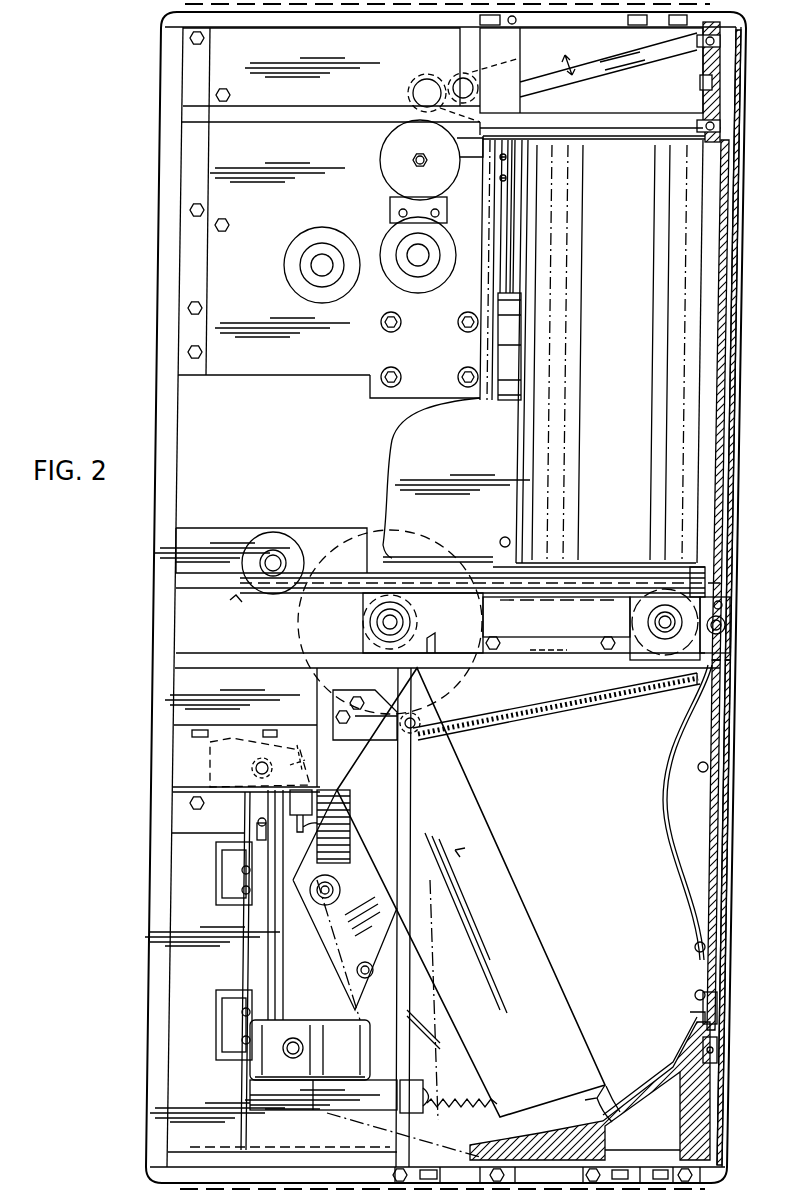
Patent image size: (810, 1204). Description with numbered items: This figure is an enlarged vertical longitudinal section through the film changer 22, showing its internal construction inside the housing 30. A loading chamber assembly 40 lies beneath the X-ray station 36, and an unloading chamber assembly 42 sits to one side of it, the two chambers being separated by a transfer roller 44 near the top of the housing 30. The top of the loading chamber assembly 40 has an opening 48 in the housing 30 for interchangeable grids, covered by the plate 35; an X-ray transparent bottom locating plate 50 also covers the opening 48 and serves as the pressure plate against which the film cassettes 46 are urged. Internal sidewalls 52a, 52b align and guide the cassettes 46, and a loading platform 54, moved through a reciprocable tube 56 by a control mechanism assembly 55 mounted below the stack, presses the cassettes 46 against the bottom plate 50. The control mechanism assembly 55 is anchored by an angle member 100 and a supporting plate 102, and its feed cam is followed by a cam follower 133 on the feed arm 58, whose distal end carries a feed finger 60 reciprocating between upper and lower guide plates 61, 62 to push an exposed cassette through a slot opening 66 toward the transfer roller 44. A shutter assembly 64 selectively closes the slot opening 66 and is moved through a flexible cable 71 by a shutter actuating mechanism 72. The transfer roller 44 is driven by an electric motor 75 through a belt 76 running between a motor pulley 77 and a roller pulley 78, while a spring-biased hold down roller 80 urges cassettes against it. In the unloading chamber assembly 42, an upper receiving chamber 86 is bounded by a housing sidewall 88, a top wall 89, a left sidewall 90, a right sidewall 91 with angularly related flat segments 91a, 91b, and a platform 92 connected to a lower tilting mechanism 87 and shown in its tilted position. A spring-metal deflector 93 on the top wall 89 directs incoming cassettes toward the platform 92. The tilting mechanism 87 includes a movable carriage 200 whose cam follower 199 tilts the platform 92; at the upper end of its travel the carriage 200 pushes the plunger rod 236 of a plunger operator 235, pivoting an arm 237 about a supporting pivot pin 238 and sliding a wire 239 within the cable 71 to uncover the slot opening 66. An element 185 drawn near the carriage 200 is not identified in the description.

The film changer 22 is at (752, 724).
The housing 30 is at (725, 1125).
The top cover plate 35 is at (742, 262).
The X-ray station 36 is at (753, 203).
The loading chamber assembly 40 is at (701, 346).
The unloading chamber assembly 42 is at (690, 980).
The transfer roller 44 is at (662, 597).
The film cassettes 46 is at (613, 275).
The opening 48 is at (735, 173).
The bottom locating plate 50 is at (735, 226).
The internal sidewall 52a is at (576, 143).
The inner transverse sidewall 52b is at (595, 567).
The loading platform 54 is at (521, 338).
The control mechanism assembly 55 is at (330, 368).
The tube 56 is at (480, 345).
The feed arm 58 is at (609, 86).
The feed finger 60 is at (703, 82).
The upper guide plate 61 is at (722, 33).
The lower guide plate 62 is at (697, 50).
The shutter assembly 64 is at (653, 597).
The slot opening 66 is at (707, 567).
The flexible cable 71 is at (238, 606).
The shutter actuating mechanism 72 is at (144, 597).
The electric motor 75 is at (332, 550).
The belt 76 is at (468, 565).
The motor pulley 77 is at (390, 622).
The roller pulley 78 is at (630, 618).
The hold down roller 80 is at (735, 622).
The upper receiving chamber 86 is at (693, 1010).
The lower tilting mechanism 87 is at (261, 956).
The sidewall 88 is at (580, 872).
The top wall 89 is at (709, 790).
The left sidewall 90 is at (588, 695).
The right sidewall 91 is at (657, 1060).
The wall segment 91a is at (683, 1040).
The wall segment 91b is at (622, 1080).
The receiving platform 92 is at (478, 808).
The deflector 93 is at (666, 767).
The angle member 100 is at (197, 372).
The supporting plate 102 is at (265, 368).
The cam follower 133 is at (408, 102).
The return spring 185 is at (470, 1103).
The cam follower 199 is at (288, 1108).
The movable carriage 200 is at (365, 1083).
The plunger operator 235 is at (322, 788).
The plunger rod 236 is at (313, 827).
The arm 237 is at (238, 745).
The supporting pivot pin 238 is at (270, 767).
The wire 239 is at (222, 735).